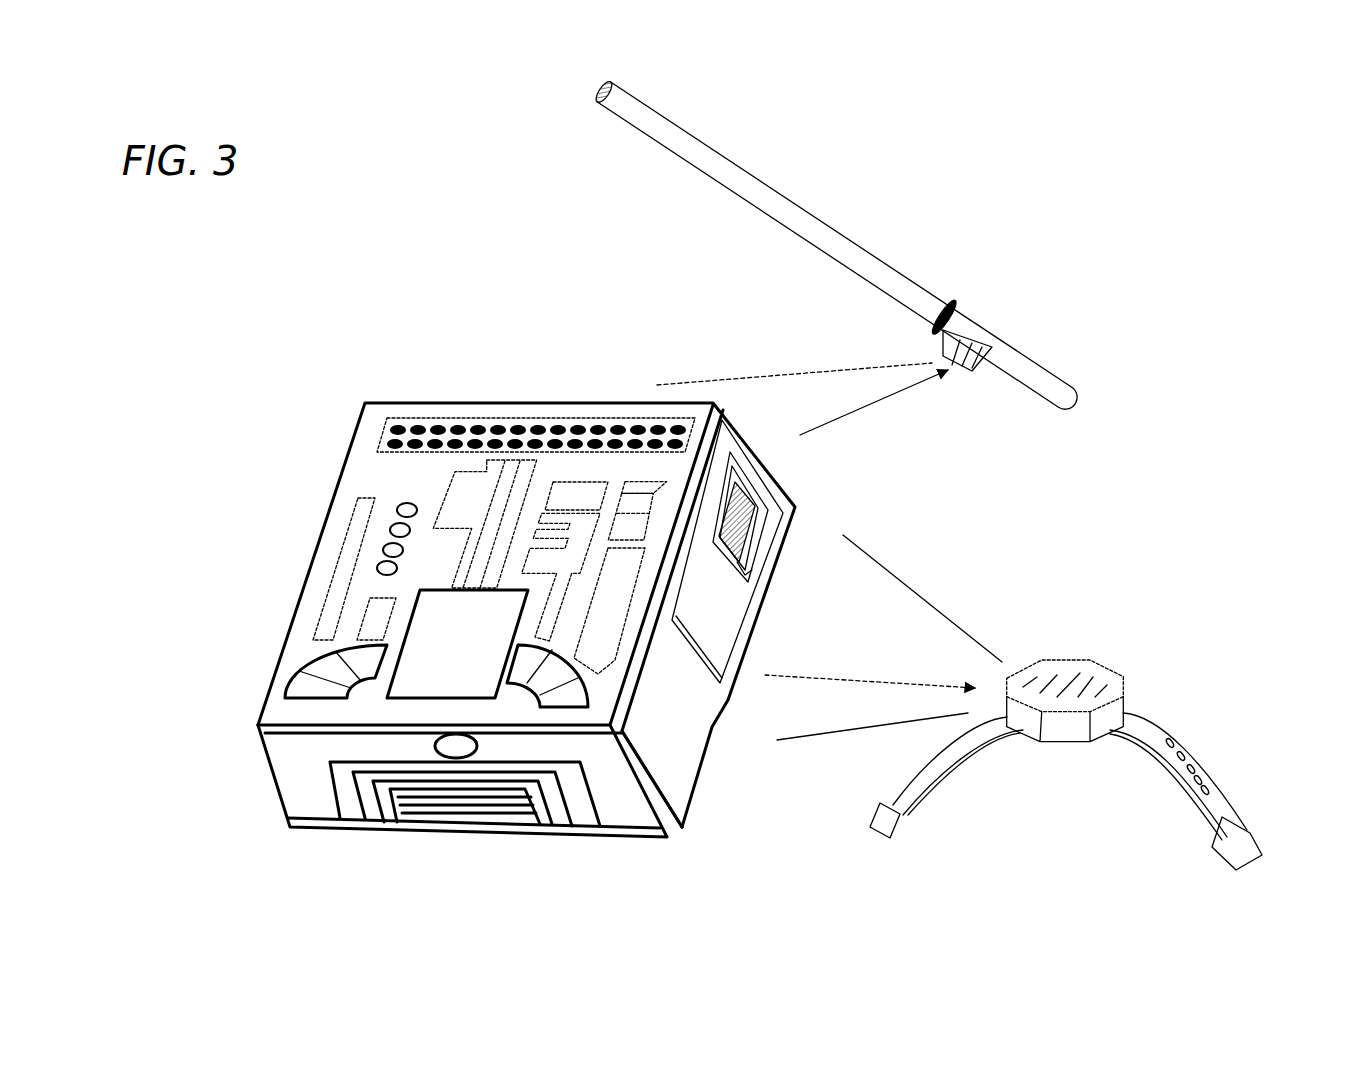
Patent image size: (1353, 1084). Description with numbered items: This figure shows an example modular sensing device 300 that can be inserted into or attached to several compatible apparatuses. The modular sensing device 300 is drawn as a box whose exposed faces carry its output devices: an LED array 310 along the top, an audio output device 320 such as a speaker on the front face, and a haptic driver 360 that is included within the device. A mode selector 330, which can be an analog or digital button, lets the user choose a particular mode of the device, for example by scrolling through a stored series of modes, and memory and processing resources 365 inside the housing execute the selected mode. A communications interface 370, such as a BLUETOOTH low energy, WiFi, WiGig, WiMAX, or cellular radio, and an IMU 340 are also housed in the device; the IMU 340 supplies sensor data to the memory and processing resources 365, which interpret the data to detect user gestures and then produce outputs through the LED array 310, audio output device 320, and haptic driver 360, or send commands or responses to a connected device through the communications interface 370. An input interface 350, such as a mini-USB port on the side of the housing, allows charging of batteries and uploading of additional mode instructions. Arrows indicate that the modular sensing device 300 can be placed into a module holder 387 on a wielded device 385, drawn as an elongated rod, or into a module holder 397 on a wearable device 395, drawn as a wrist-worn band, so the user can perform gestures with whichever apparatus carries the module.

The modular sensing device 300 is at (532, 603).
The LED array 310 is at (372, 446).
The audio output device 320 is at (470, 840).
The mode selector 330 is at (427, 746).
The IMU 340 is at (200, 697).
The input interface 350 is at (781, 582).
The haptic driver 360 is at (262, 573).
The memory and processing resources 365 is at (703, 837).
The communications interface 370 is at (292, 507).
The wielded device 385 is at (837, 246).
The module holder 387 is at (813, 530).
The wearable device 395 is at (1066, 791).
The module holder 397 is at (1065, 660).